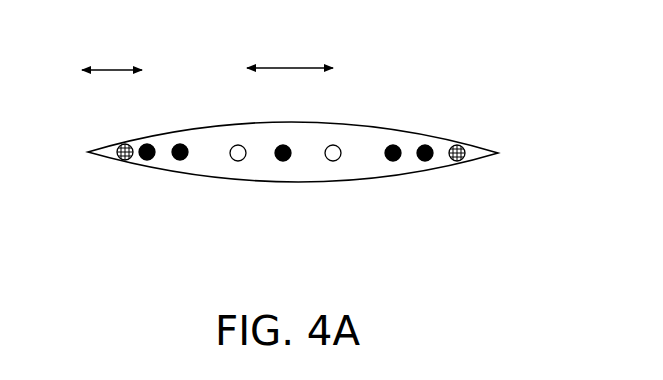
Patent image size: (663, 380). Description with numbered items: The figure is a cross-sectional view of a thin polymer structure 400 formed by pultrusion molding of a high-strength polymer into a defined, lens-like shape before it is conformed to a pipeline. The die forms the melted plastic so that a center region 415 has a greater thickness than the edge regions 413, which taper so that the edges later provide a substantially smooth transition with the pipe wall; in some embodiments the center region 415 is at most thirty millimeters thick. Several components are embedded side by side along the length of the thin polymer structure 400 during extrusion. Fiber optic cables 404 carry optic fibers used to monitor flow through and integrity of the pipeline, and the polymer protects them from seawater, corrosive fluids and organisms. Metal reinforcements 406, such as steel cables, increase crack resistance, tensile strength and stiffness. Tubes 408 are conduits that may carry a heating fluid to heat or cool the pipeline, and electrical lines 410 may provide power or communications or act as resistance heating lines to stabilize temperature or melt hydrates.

The thin polymer structure 400 is at (488, 149).
The fiber optic cable 404 is at (180, 161).
The metal reinforcements 406 is at (147, 143).
The tubes 408 is at (333, 144).
The electrical lines 410 is at (122, 161).
The edge regions 413 is at (115, 66).
The center region 415 is at (295, 64).